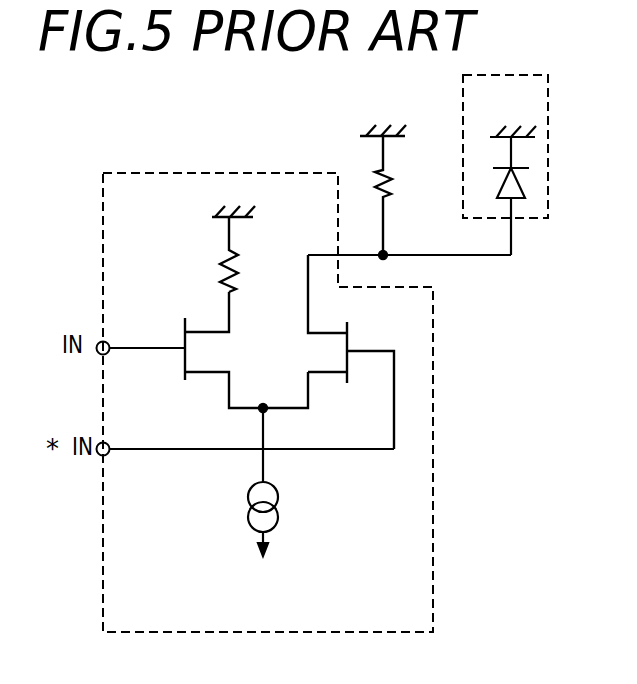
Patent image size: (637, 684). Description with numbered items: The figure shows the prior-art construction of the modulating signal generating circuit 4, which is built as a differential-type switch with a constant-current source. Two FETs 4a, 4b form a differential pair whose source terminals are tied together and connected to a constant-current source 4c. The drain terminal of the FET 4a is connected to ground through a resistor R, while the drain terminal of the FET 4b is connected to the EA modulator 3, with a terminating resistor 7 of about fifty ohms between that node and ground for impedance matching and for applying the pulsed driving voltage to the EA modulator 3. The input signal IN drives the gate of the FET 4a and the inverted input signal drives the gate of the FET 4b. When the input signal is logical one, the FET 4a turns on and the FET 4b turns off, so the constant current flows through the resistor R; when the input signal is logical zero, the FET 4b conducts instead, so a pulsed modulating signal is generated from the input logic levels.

The EA modulator 3 is at (550, 113).
The terminating resistor 7 is at (395, 173).
The modulating signal generating circuit 4 is at (433, 490).
The FET 4a is at (203, 344).
The FET 4b is at (329, 352).
The constant-current source 4c is at (283, 498).
The resistor R is at (236, 254).